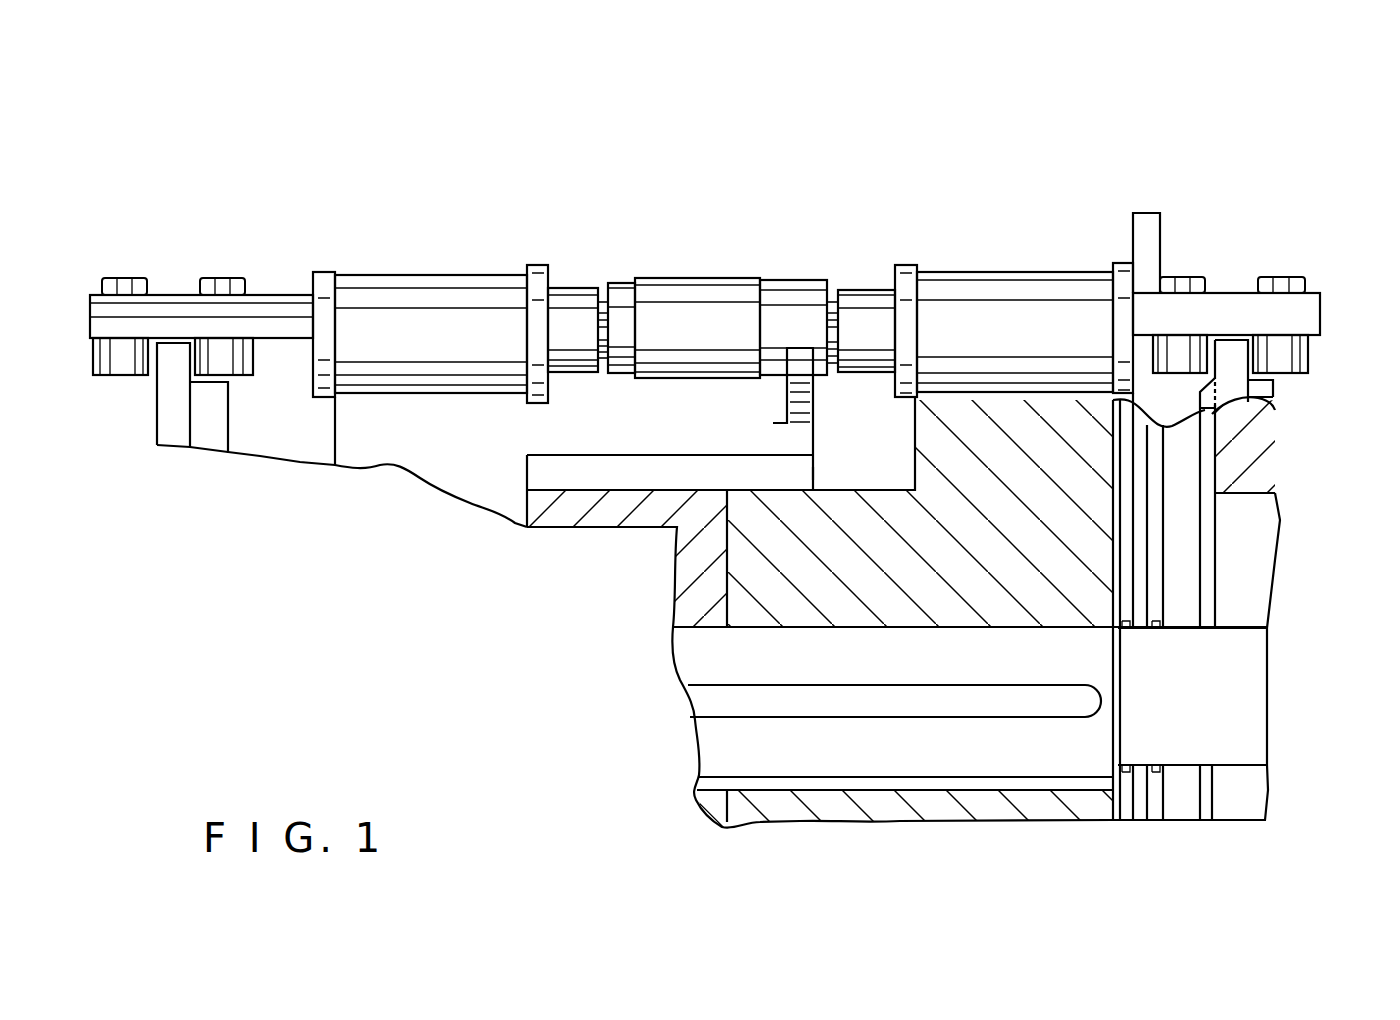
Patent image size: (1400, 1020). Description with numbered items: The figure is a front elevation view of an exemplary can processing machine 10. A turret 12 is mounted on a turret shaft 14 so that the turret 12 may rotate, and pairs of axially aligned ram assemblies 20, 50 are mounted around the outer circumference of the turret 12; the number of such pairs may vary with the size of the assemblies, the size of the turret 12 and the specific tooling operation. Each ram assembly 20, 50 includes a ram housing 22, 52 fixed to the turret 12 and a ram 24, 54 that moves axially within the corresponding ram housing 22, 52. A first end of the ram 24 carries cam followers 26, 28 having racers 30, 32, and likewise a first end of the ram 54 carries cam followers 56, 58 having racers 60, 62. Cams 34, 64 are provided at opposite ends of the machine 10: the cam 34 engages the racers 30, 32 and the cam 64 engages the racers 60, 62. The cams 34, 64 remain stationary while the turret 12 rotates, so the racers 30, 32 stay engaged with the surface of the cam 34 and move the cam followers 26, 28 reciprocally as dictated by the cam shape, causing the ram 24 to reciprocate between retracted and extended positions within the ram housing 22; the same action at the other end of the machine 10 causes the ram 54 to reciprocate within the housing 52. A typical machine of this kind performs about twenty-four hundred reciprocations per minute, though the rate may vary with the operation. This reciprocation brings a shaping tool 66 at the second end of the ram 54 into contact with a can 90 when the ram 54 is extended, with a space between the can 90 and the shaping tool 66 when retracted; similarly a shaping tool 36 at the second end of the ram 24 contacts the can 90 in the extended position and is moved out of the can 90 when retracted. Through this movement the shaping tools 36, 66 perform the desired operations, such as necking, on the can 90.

The can processing machine 10 is at (578, 160).
The turret 12 is at (427, 455).
The turret shaft 14 is at (1237, 713).
The ram assembly 20 is at (358, 213).
The ram housing 22 is at (408, 305).
The ram 24 is at (277, 305).
The cam follower 26 is at (215, 273).
The cam follower 28 is at (110, 273).
The racer 30 is at (235, 363).
The racer 32 is at (112, 370).
The cam 34 is at (172, 433).
The shaping tool 36 is at (622, 292).
The ram assembly 50 is at (920, 190).
The ram housing 52 is at (1012, 302).
The ram 54 is at (880, 303).
The cam follower 56 is at (1178, 276).
The cam follower 58 is at (1285, 276).
The racer 60 is at (1182, 355).
The racer 62 is at (1290, 363).
The cam 64 is at (1233, 388).
The shaping tool 66 is at (808, 302).
The can 90 is at (690, 287).